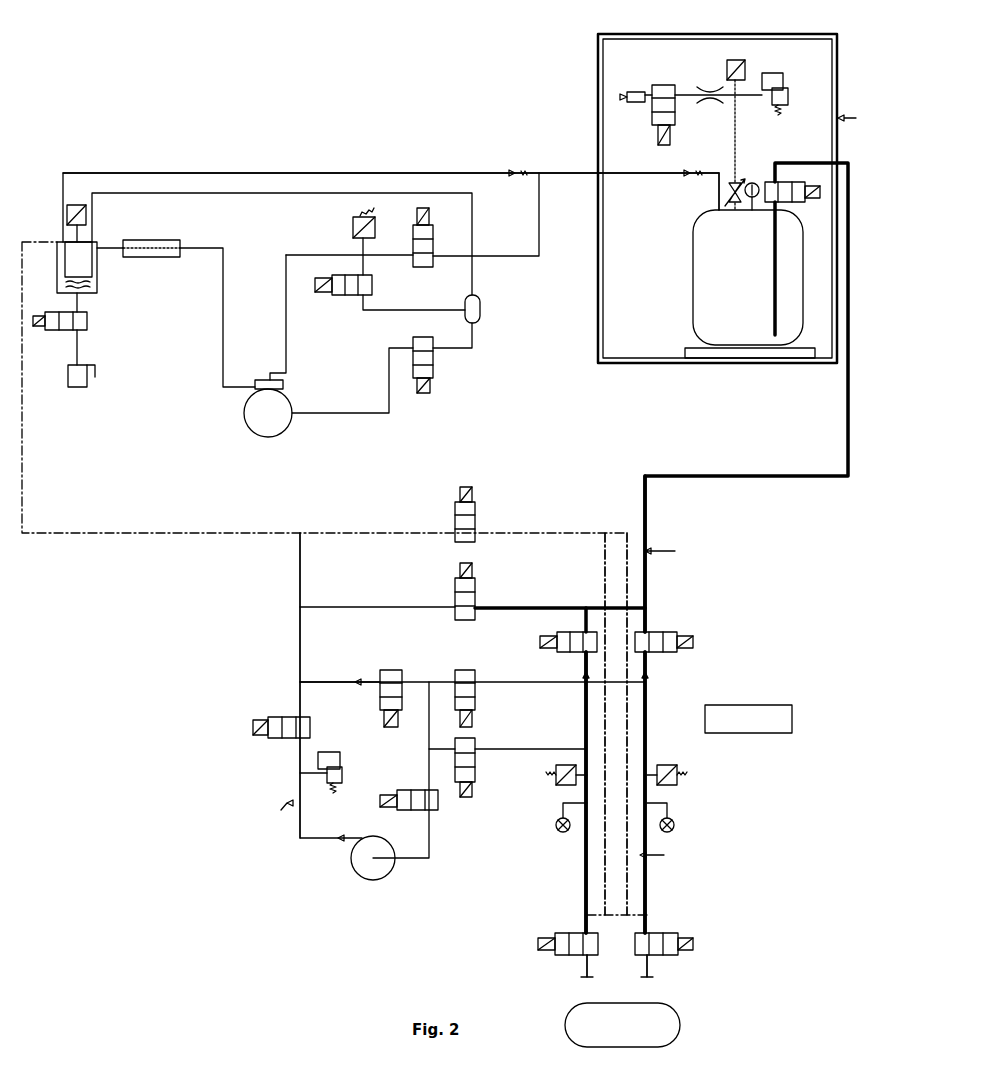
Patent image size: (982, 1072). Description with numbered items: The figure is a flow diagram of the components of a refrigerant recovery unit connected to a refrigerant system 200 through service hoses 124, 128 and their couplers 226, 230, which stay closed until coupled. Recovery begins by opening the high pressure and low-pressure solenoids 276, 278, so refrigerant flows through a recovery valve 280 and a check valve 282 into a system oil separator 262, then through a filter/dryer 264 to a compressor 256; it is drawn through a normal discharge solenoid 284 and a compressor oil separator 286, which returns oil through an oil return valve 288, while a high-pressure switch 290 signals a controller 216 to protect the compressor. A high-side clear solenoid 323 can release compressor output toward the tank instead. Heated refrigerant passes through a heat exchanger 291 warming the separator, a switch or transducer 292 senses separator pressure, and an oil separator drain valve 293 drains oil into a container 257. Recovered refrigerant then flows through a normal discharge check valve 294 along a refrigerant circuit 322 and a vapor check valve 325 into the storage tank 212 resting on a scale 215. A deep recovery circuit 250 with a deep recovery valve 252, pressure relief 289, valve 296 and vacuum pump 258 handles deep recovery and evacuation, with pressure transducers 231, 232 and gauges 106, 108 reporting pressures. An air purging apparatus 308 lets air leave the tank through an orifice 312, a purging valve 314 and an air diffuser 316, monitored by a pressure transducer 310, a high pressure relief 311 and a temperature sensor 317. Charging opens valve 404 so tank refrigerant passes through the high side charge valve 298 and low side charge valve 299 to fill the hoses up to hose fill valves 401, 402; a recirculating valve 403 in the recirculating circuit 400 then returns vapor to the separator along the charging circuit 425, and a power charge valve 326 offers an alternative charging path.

The air purging apparatus 308 is at (888, 126).
The pressure transducer 310 is at (745, 62).
The high pressure relief 311 is at (778, 115).
The orifice 312 is at (710, 86).
The purging valve 314 is at (656, 132).
The air diffuser 316 is at (636, 90).
The temperature sensor 317 is at (758, 178).
The valve 404 is at (798, 180).
The refrigerant circuit 322 is at (660, 178).
The vapor check valve 325 is at (700, 185).
The normal discharge check valve 294 is at (508, 170).
The storage tank 212 is at (693, 265).
The scale 215 is at (690, 350).
The switch or transducer 292 is at (88, 216).
The filter/dryer 264 is at (160, 240).
The system oil separator 262 is at (92, 270).
The heat exchanger 291 is at (90, 290).
The oil separator drain valve 293 is at (88, 321).
The container 257 is at (90, 375).
The compressor 256 is at (252, 428).
The high-pressure switch 290 is at (351, 224).
The high-side clear solenoid 323 is at (416, 216).
The normal discharge solenoid 284 is at (374, 289).
The compressor oil separator 286 is at (482, 305).
The oil return valve 288 is at (435, 370).
The recirculating valve 403 is at (457, 545).
The power charge valve 326 is at (457, 622).
The charging circuit 425 is at (675, 551).
The high side charge valve 298 is at (538, 642).
The low side charge valve 299 is at (695, 640).
The check valve 282 is at (357, 678).
The recovery valve 280 is at (378, 695).
The low-pressure solenoid 278 is at (477, 702).
The high pressure solenoid 276 is at (477, 768).
The deep recovery valve 252 is at (270, 740).
The pressure relief 289 is at (343, 776).
The valve 296 is at (390, 803).
The deep recovery circuit 250 is at (284, 804).
The vacuum pump 258 is at (395, 860).
The controller 216 is at (794, 718).
The pressure transducer 232 is at (556, 783).
The pressure transducer 231 is at (677, 787).
The high gauge 106 is at (554, 826).
The low gauge 108 is at (676, 826).
The recirculating circuit 400 is at (664, 855).
The service hose 124 is at (584, 902).
The service hose 128 is at (648, 905).
The hose fill valve 401 is at (548, 957).
The hose fill valve 402 is at (690, 955).
The coupler 226 is at (585, 980).
The coupler 230 is at (650, 980).
The refrigerant system 200 is at (682, 1020).